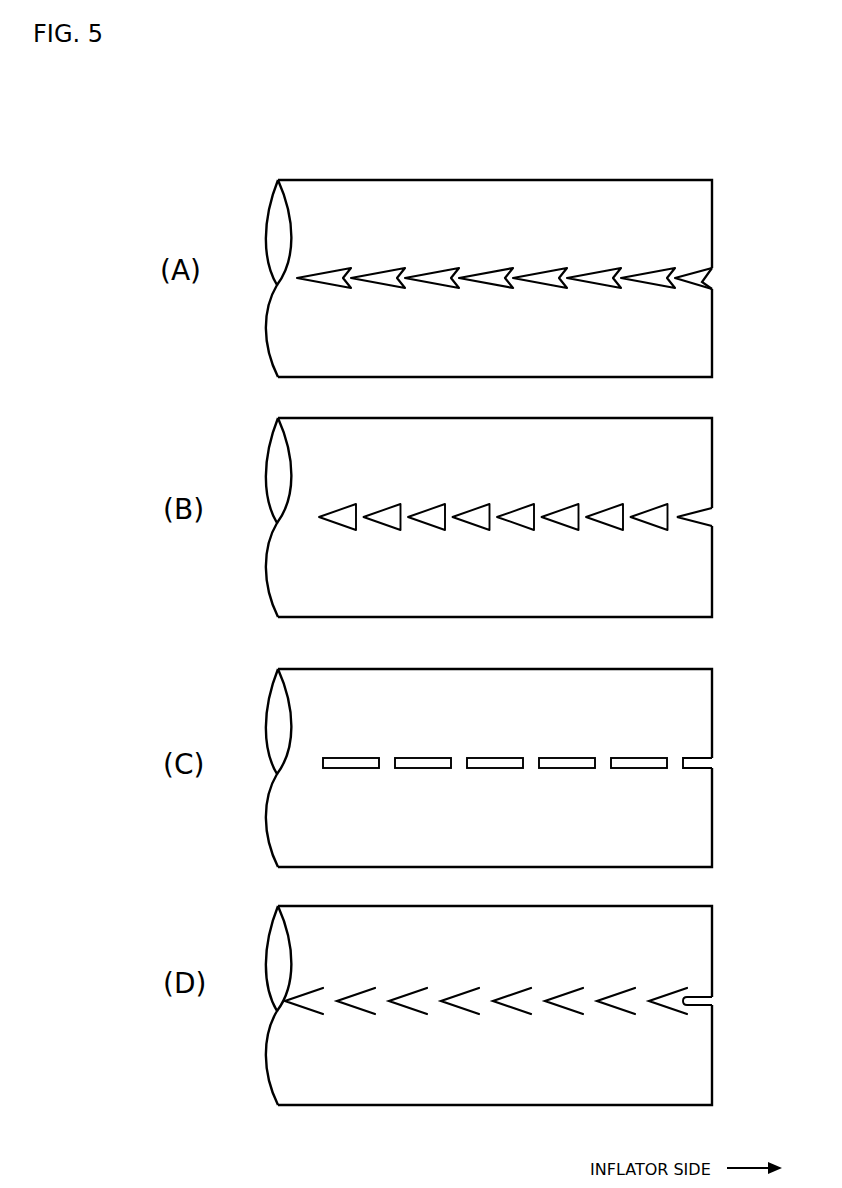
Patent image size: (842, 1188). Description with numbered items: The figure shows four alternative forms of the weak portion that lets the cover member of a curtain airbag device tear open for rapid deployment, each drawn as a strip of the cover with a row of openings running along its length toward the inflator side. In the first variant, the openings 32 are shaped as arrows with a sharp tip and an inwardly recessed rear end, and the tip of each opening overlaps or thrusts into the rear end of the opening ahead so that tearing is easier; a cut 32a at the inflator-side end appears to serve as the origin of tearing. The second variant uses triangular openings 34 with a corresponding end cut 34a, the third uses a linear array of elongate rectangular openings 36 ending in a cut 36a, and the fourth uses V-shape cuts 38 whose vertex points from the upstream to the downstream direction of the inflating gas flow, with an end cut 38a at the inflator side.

The arrow-shaped openings 32 is at (548, 276).
The notch at inflator-side edge 32a is at (712, 275).
The triangular openings 34 is at (668, 503).
The notch at inflator-side edge 34a is at (712, 517).
The elongate rectangular openings 36 is at (660, 755).
The notch at inflator-side edge 36a is at (712, 761).
The V-shape cuts 38 is at (665, 990).
The notch at inflator-side edge 38a is at (712, 1001).